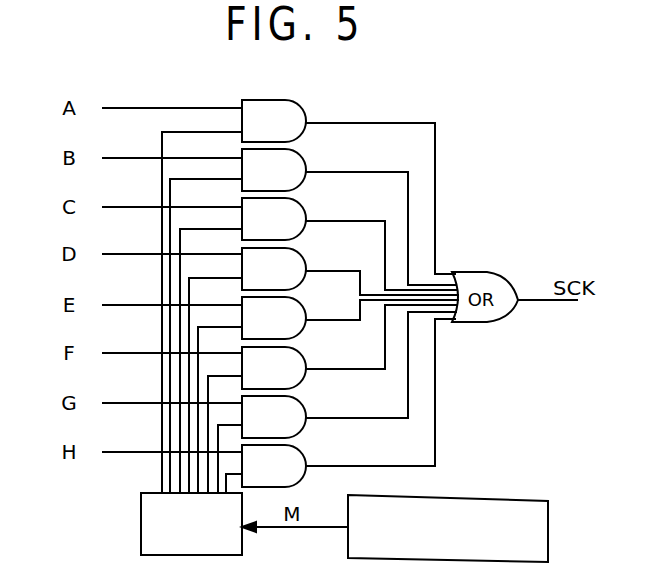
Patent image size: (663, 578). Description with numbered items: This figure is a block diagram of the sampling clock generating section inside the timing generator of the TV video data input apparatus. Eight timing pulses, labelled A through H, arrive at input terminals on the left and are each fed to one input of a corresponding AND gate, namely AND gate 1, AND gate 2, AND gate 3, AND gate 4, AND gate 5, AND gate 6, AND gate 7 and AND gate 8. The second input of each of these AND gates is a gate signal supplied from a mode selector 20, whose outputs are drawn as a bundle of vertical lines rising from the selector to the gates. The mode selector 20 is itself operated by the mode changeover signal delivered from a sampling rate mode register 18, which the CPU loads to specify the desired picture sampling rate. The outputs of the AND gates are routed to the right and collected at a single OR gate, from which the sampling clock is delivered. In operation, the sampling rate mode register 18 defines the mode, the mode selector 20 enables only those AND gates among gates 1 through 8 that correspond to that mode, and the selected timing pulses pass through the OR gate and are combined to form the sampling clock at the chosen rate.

The sampling rate mode register 18 is at (519, 498).
The mode selector 20 is at (141, 515).
The AND gate 1 is at (309, 296).
The AND gate 2 is at (313, 321).
The AND gate 3 is at (319, 345).
The AND gate 4 is at (324, 370).
The AND gate 5 is at (328, 395).
The AND gate 6 is at (333, 399).
The AND gate 7 is at (337, 402).
The AND gate 8 is at (341, 406).